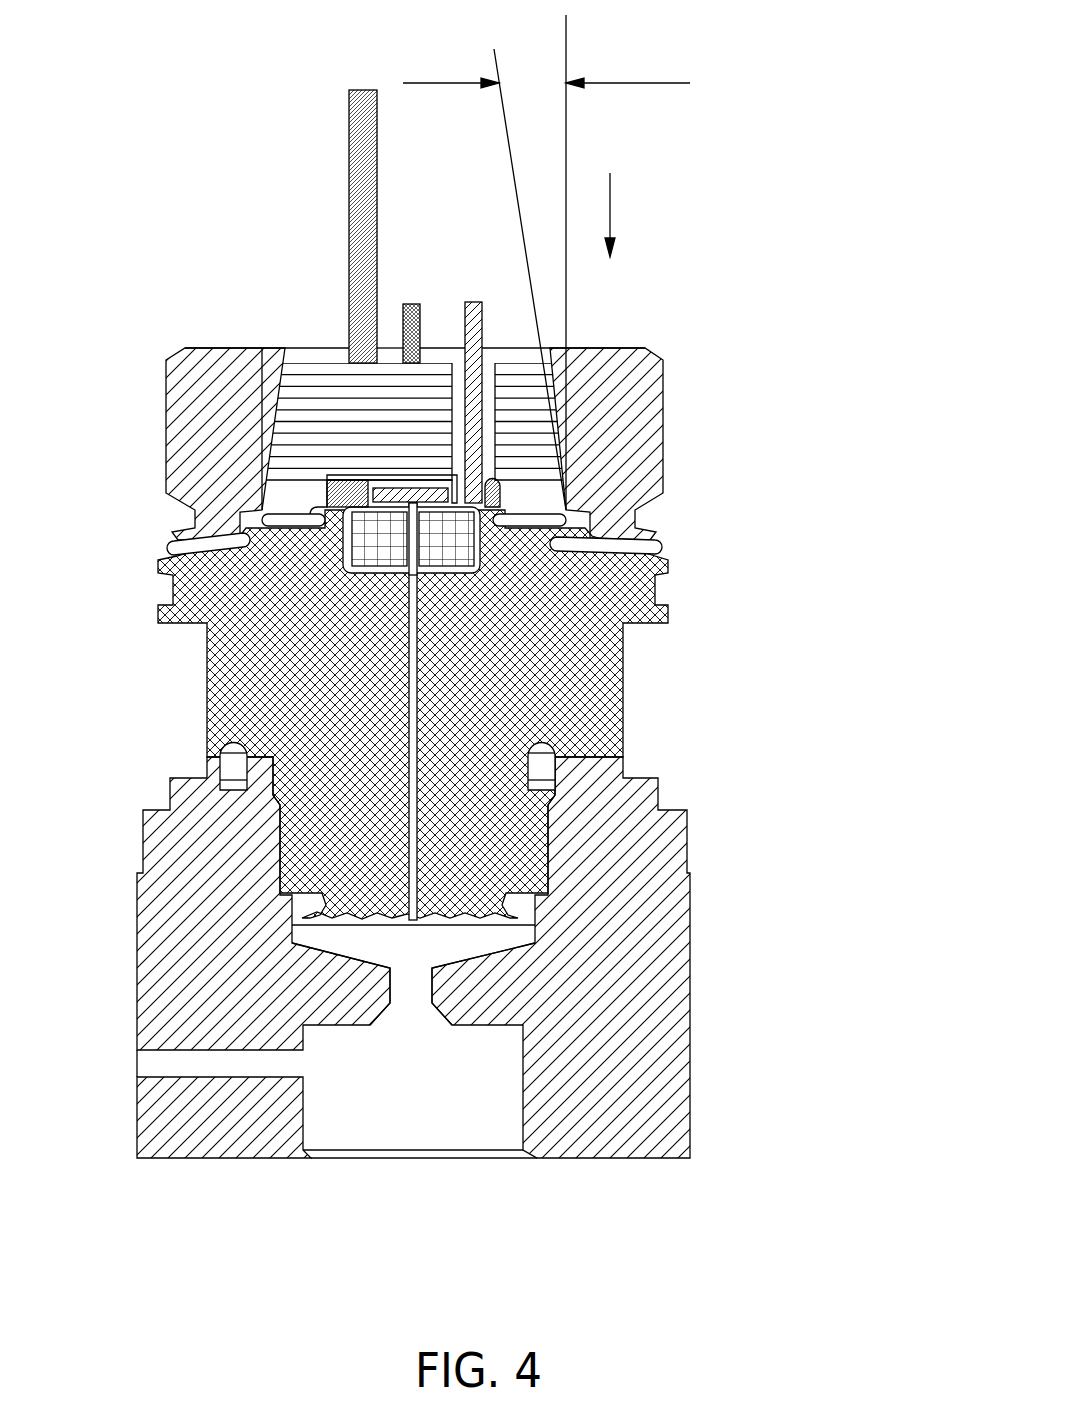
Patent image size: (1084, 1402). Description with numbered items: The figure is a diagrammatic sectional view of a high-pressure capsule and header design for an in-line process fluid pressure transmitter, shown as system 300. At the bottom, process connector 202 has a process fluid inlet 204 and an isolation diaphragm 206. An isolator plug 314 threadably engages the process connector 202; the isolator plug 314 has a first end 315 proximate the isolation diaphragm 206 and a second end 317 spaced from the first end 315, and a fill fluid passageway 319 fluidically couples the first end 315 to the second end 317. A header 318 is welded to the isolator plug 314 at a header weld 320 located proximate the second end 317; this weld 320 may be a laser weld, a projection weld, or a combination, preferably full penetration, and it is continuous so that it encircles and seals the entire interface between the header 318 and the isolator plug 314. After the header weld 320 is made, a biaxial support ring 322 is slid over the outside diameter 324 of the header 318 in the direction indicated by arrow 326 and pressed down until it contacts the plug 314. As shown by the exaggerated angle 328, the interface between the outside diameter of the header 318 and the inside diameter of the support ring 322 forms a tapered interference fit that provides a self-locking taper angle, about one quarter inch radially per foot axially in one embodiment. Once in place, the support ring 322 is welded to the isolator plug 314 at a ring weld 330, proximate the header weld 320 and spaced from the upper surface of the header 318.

The process connector 202 is at (690, 1118).
The process fluid inlet 204 is at (447, 1158).
The isolation diaphragm 206 is at (425, 925).
The system 300 is at (828, 653).
The isolator plug 314 is at (622, 688).
The first end 315 is at (535, 926).
The second end 317 is at (455, 503).
The header 318 is at (330, 362).
The fill fluid passageway 319 is at (410, 733).
The header weld 320 is at (490, 513).
The biaxial support ring 322 is at (660, 357).
The outside diameter 324 is at (566, 470).
The arrow 326 is at (610, 212).
The exaggerated angle 328 is at (622, 83).
The ring weld 330 is at (665, 545).